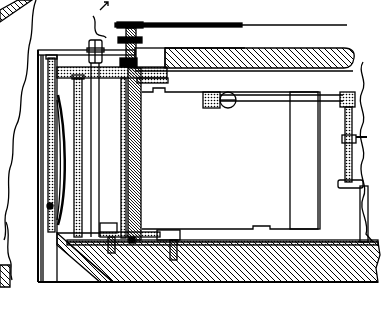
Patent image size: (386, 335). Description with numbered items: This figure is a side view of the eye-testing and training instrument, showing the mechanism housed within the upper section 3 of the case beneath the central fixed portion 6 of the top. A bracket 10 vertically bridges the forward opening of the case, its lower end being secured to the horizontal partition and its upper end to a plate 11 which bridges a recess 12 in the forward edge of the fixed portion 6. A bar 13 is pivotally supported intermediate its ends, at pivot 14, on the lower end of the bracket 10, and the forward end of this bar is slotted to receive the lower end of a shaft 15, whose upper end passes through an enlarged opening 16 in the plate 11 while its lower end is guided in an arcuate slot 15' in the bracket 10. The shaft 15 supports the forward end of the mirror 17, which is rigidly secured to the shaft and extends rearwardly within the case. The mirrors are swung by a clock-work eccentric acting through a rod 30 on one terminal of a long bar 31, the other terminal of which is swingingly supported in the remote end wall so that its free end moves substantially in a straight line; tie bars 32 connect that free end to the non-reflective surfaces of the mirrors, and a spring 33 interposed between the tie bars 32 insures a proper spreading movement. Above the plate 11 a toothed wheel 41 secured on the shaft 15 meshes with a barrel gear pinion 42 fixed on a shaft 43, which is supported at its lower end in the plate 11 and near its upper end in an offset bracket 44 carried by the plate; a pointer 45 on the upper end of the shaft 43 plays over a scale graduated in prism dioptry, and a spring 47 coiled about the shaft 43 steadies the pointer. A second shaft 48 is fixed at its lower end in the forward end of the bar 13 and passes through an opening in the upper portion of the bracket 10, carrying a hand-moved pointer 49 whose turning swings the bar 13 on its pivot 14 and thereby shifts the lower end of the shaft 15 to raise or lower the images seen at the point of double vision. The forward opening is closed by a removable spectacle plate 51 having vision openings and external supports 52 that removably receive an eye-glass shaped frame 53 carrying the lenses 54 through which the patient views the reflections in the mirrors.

The upper section 3 is at (366, 147).
The central fixed portion 6 is at (264, 54).
The bracket 10 is at (83, 195).
The plate 11 is at (169, 80).
The recess 12 is at (62, 50).
The bar 13 is at (153, 232).
The pivot 14 is at (143, 210).
The shaft 15 is at (155, 155).
The arcuate slot 15' is at (202, 231).
The enlarged opening 16 is at (99, 134).
The mirror 17 is at (313, 93).
The rod 30 is at (347, 138).
The bar 31 is at (360, 208).
The tie bars 32 is at (270, 106).
The spring 33 is at (233, 110).
The toothed wheel 41 is at (195, 56).
The barrel gear pinion 42 is at (138, 62).
The shaft 43 is at (123, 22).
The offset bracket 44 is at (141, 24).
The pointer 45 is at (233, 24).
The spring 47 is at (91, 42).
The shaft 48 is at (141, 130).
The pointer 49 is at (91, 22).
The spectacle plate 51 is at (47, 207).
The external supports 52 is at (42, 87).
The frame 53 is at (50, 158).
The lenses 54 is at (57, 176).